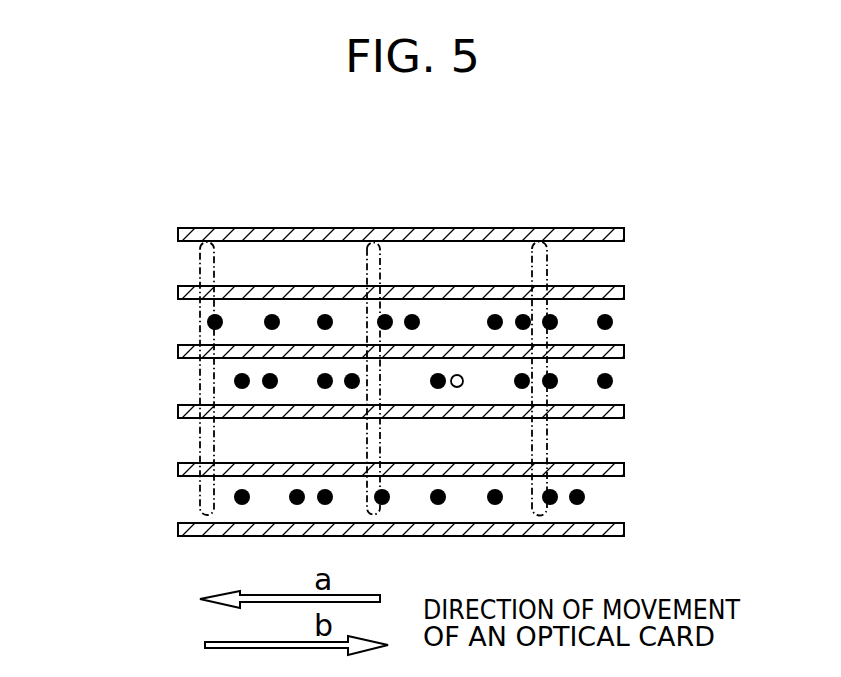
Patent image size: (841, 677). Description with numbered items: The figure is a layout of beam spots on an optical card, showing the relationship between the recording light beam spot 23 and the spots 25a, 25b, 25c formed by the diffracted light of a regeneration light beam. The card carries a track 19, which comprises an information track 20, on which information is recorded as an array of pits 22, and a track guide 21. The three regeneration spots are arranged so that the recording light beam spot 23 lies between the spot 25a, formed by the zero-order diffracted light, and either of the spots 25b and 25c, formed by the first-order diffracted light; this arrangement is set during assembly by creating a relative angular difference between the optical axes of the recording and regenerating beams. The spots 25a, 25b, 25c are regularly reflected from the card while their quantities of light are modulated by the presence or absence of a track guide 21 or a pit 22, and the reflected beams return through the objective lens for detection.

The track 19 is at (90, 362).
The information track 20 is at (187, 383).
The track guide 21 is at (177, 412).
The pit 22 is at (613, 322).
The recording light beam spot 23 is at (460, 388).
The spot formed by zero-order diffracted light 25a is at (381, 273).
The spot formed by first-order diffracted light 25b is at (549, 273).
The spot formed by first-order diffracted light 25c is at (215, 273).